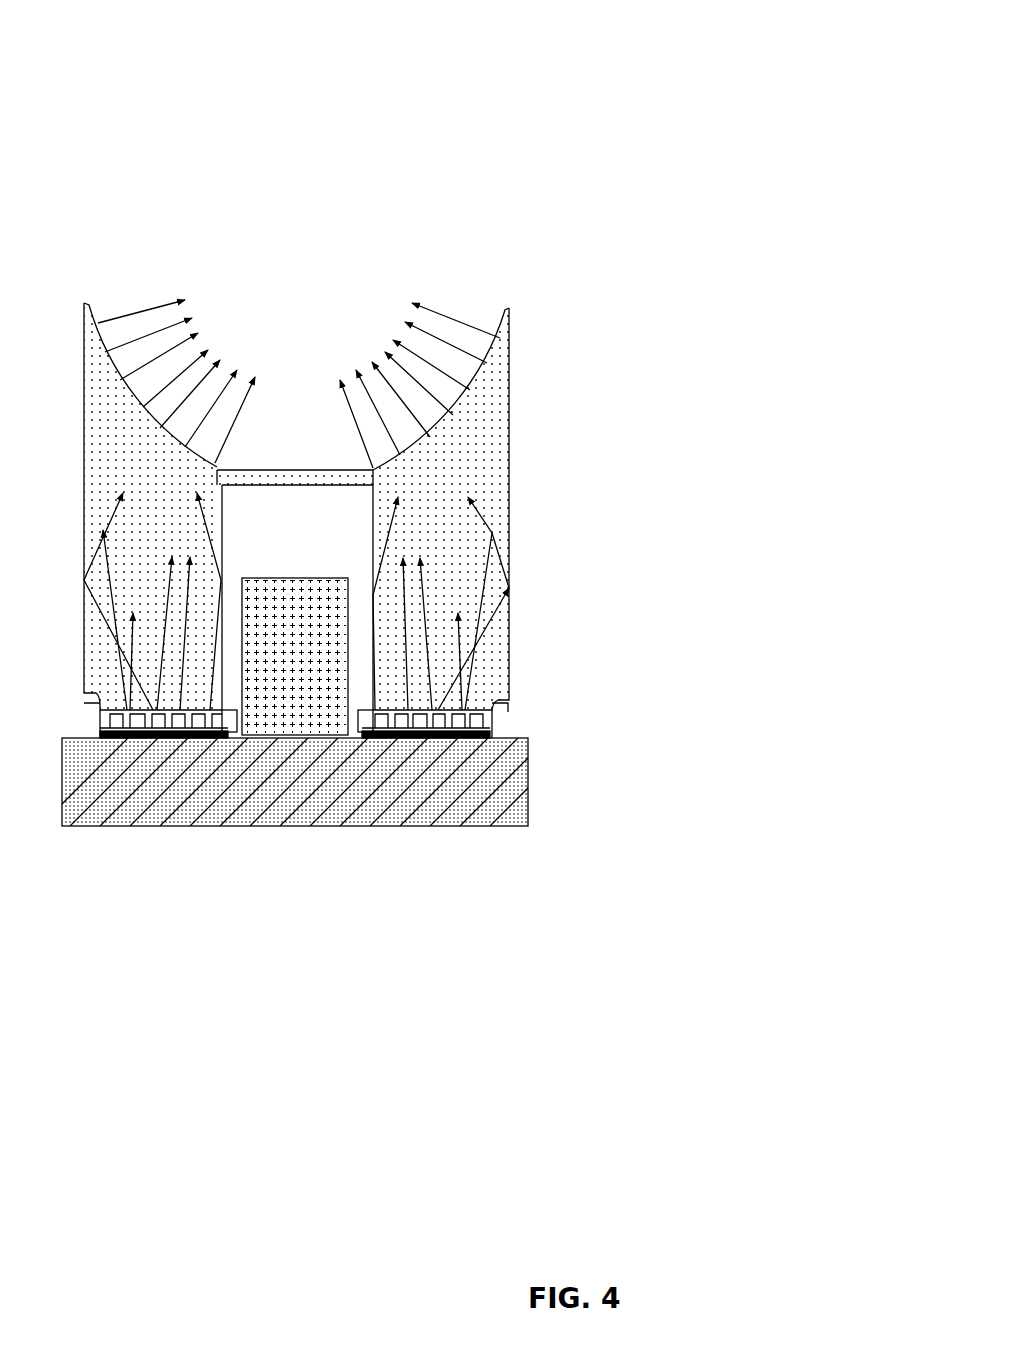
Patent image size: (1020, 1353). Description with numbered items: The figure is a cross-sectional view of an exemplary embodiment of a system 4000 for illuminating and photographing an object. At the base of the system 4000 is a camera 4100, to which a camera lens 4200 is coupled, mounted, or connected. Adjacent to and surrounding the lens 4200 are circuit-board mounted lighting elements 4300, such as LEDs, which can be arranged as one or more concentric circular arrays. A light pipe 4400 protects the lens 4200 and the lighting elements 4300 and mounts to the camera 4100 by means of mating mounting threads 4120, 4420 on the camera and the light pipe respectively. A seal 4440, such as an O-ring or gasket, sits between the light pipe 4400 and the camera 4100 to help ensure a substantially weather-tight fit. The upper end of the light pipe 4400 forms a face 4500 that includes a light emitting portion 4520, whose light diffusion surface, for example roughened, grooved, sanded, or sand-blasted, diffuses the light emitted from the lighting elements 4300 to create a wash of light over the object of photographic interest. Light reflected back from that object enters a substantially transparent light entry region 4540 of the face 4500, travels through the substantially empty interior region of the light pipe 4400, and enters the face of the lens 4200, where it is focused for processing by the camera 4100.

The system 4000 is at (455, 48).
The camera 4100 is at (530, 797).
The mounting threads 4120 is at (100, 737).
The camera lens 4200 is at (288, 697).
The lighting elements 4300 is at (423, 738).
The light pipe 4400 is at (510, 648).
The mounting threads 4420 is at (296, 719).
The seal 4440 is at (494, 705).
The face 4500 is at (421, 275).
The light emitting portion 4520 is at (157, 413).
The light entry region 4540 is at (302, 463).